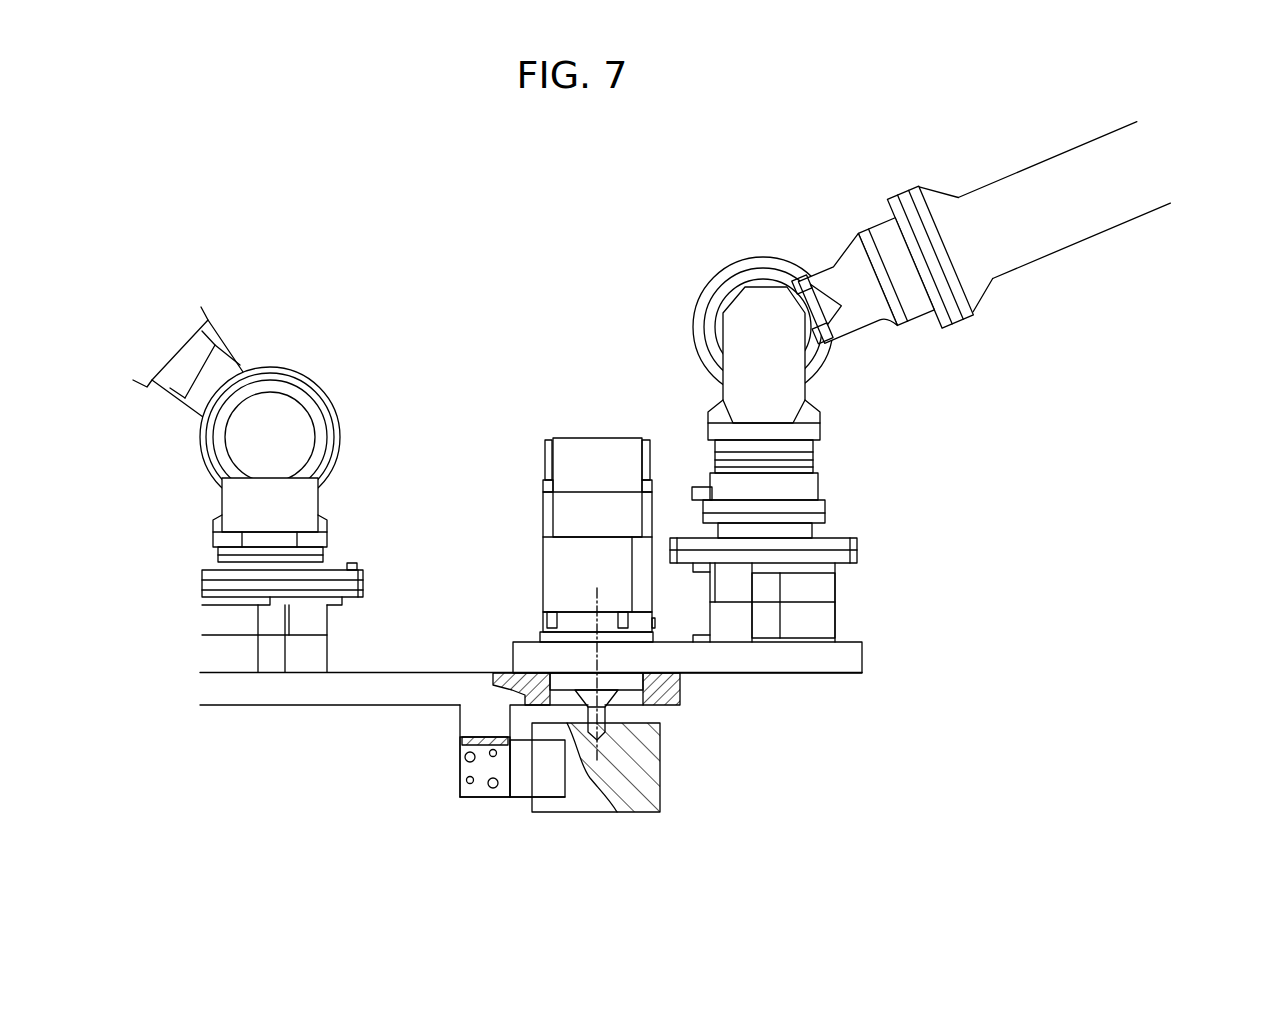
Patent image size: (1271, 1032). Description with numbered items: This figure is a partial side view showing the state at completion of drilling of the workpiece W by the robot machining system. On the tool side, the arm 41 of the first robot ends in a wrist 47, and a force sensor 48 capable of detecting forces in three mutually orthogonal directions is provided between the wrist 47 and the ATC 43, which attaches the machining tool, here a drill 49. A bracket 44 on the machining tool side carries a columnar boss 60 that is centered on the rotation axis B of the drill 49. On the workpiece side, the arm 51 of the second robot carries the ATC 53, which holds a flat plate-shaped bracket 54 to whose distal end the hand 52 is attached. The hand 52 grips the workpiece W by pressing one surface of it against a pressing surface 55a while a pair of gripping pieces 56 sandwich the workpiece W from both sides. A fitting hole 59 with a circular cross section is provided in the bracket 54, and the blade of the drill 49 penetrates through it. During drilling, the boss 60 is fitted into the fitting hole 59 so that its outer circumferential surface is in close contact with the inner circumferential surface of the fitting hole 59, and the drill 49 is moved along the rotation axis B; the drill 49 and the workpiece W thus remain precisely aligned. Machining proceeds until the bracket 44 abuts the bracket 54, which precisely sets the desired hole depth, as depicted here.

The arm 41 is at (1043, 160).
The ATC 43 is at (866, 606).
The bracket 44 is at (818, 675).
The wrist 47 is at (821, 428).
The force sensor 48 is at (820, 487).
The drill 49 is at (588, 714).
The arm 51 is at (201, 307).
The hand 52 is at (474, 808).
The ATC 53 is at (366, 617).
The bracket 54 is at (245, 706).
The pressing surface 55a is at (538, 776).
The gripping pieces 56 is at (522, 787).
The fitting hole 59 is at (635, 710).
The boss 60 is at (683, 688).
The workpiece W is at (645, 775).
The rotation axis B is at (593, 596).